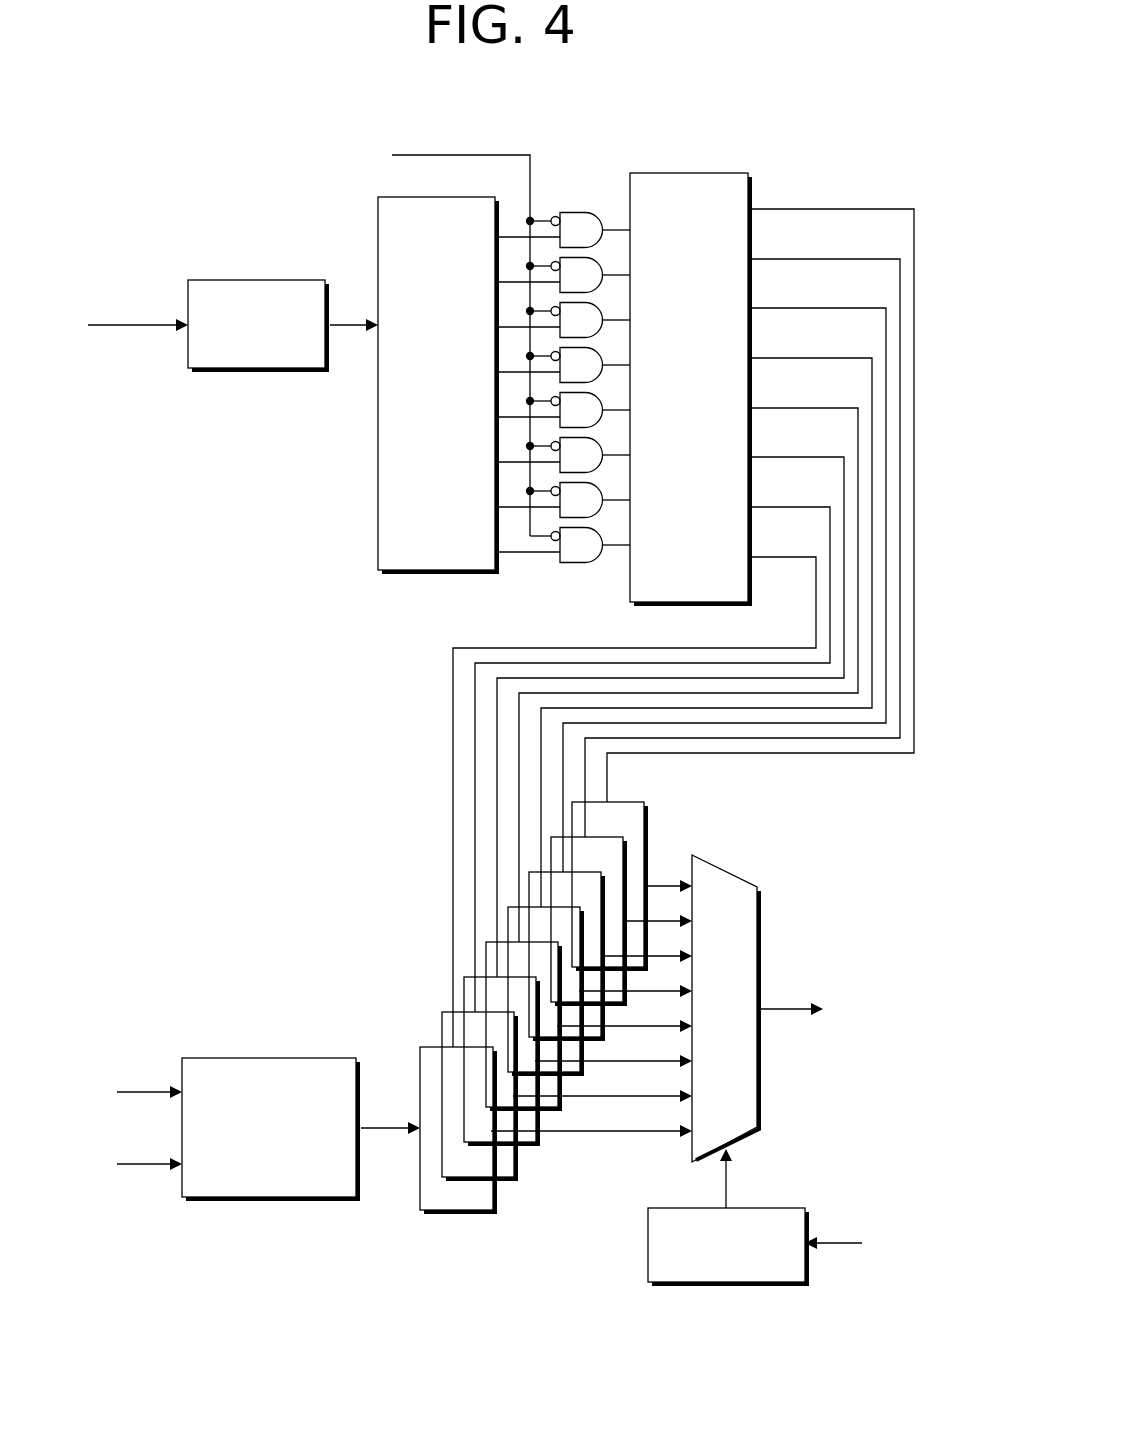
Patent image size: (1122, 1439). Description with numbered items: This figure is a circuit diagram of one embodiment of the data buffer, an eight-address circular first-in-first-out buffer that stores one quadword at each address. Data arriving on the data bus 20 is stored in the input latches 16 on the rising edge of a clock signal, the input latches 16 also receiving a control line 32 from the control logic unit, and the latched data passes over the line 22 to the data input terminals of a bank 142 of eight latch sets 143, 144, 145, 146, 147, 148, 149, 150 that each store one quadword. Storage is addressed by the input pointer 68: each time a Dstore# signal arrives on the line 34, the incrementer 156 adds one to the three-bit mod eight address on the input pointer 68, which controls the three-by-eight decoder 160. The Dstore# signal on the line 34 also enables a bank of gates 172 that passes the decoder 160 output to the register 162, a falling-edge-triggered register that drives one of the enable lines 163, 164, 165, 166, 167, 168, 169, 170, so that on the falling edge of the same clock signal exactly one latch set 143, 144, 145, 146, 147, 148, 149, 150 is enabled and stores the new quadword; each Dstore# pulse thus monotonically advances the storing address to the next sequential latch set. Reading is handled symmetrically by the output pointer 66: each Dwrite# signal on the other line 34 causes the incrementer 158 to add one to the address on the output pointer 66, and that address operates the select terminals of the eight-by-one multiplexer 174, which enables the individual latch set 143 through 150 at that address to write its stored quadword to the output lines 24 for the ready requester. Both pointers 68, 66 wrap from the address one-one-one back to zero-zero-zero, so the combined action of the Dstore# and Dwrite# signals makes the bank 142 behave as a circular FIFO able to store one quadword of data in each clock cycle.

The control line 34 is at (422, 151).
The incrementer 156 is at (236, 351).
The input pointer 68 is at (348, 320).
The 3x8 decoder 160 is at (417, 421).
The bank of gates 172 is at (585, 170).
The register 162 is at (669, 451).
The enable line 170 is at (769, 209).
The enable line 169 is at (769, 259).
The enable line 168 is at (769, 308).
The enable line 167 is at (769, 358).
The enable line 166 is at (769, 408).
The enable line 165 is at (769, 457).
The enable line 164 is at (769, 507).
The enable line 163 is at (769, 557).
The bank of latch sets 142 is at (410, 926).
The latch set 143 is at (436, 1172).
The latch set 144 is at (458, 1041).
The latch set 145 is at (480, 1006).
The latch set 146 is at (502, 971).
The latch set 147 is at (524, 936).
The latch set 148 is at (545, 901).
The latch set 149 is at (567, 866).
The latch set 150 is at (588, 831).
The 8x1 multiplexer 174 is at (703, 1040).
The output lines 24 is at (790, 1005).
The output pointer 66 is at (730, 1183).
The incrementer 158 is at (706, 1272).
The input latches 16 is at (255, 1177).
The data bus 20 is at (142, 1096).
The control line 32 is at (142, 1168).
The line 22 is at (387, 1124).